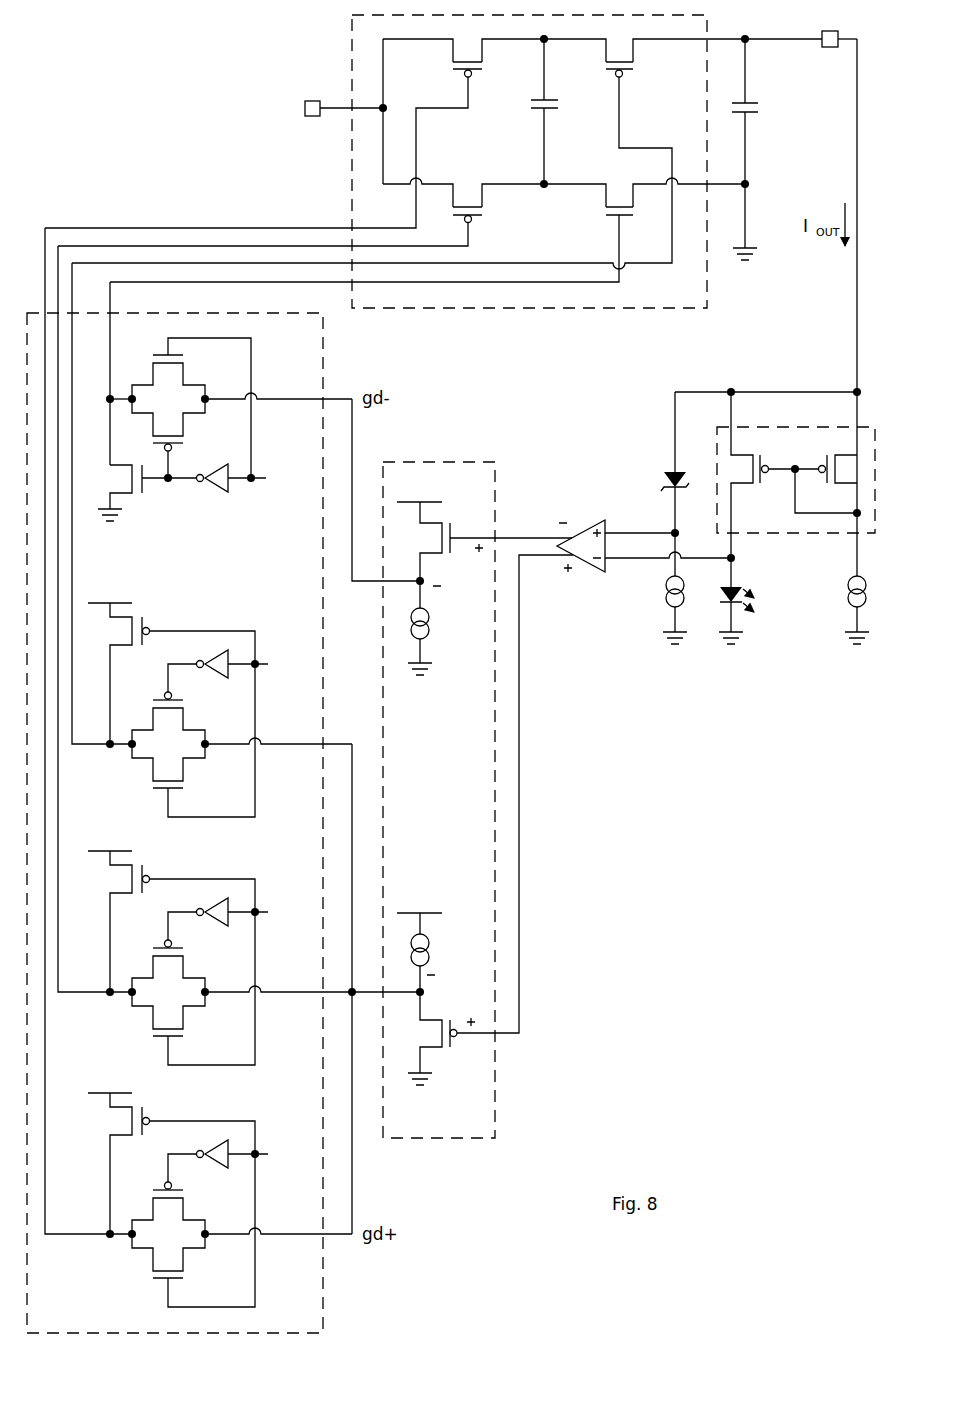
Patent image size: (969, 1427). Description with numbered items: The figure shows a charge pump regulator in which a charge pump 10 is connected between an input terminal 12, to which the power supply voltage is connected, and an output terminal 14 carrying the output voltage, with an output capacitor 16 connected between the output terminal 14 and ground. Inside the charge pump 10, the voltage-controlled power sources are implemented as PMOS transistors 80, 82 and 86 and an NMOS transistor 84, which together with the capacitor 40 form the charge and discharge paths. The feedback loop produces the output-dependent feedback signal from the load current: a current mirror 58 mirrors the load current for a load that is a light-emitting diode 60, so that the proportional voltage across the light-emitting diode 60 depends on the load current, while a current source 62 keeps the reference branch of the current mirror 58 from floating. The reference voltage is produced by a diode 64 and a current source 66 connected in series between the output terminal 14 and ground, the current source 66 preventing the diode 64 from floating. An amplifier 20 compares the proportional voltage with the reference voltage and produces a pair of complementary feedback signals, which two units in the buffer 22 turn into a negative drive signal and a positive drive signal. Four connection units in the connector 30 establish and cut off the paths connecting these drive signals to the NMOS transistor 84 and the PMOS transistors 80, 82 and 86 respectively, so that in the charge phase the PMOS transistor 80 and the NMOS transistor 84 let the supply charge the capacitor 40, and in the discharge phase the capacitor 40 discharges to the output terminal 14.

The charge pump 10 is at (530, 309).
The input terminal 12 is at (380, 104).
The output terminal 14 is at (829, 48).
The output capacitor 16 is at (765, 126).
The amplifier 20 is at (578, 526).
The buffer 22 is at (495, 822).
The connector 30 is at (323, 359).
The capacitor 40 is at (559, 125).
The current mirror 58 is at (787, 425).
The light-emitting diode 60 is at (762, 583).
The current source 62 is at (844, 600).
The diode 64 is at (671, 468).
The current source 66 is at (658, 596).
The PMOS transistor 80 is at (485, 84).
The PMOS transistor 82 is at (638, 84).
The NMOS transistor 84 is at (595, 207).
The PMOS transistor 86 is at (445, 170).